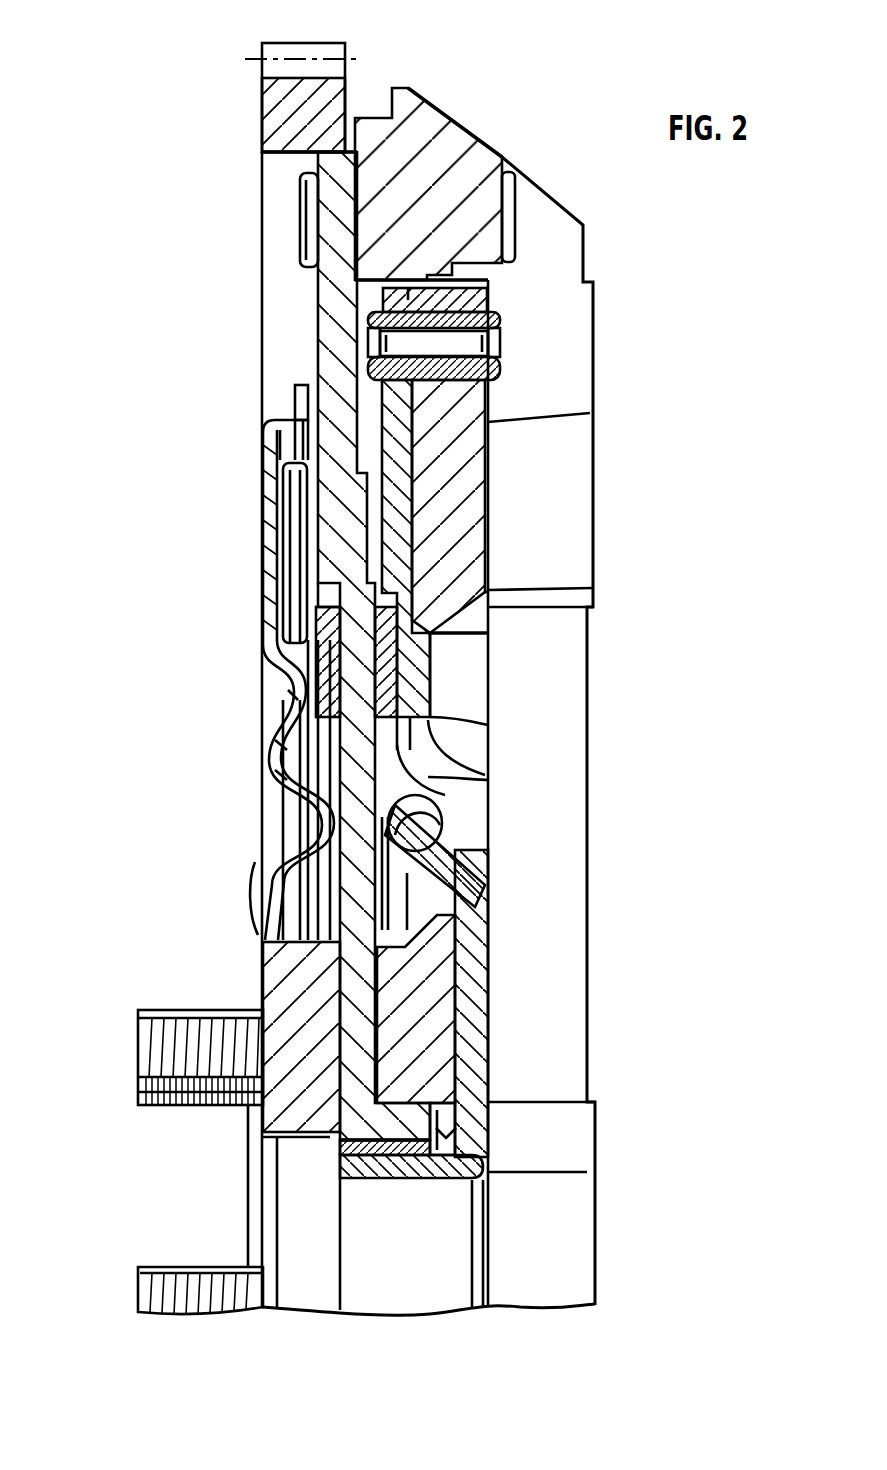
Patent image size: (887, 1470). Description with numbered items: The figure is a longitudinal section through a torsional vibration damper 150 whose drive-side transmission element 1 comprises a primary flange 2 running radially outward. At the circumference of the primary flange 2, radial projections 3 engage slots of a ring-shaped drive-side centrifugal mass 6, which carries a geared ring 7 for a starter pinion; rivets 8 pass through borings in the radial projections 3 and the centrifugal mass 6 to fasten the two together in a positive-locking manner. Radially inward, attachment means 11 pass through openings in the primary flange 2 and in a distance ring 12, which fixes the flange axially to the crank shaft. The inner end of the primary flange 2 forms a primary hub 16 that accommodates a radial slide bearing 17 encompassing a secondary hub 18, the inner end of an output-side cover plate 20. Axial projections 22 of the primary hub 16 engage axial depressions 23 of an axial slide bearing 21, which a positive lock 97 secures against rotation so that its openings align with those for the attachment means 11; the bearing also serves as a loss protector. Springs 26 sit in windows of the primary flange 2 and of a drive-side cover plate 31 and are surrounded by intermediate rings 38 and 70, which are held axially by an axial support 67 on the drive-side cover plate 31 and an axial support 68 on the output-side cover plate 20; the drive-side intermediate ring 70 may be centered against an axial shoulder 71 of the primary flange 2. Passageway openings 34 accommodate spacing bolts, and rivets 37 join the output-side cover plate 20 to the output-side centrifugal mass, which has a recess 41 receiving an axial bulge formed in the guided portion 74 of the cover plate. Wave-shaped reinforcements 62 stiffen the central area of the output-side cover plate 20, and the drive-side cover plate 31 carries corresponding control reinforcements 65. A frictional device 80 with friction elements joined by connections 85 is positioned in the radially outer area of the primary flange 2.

The drive-side transmission element 1 is at (243, 131).
The primary flange 2 is at (330, 300).
The radial projections 3 is at (320, 163).
The drive-side centrifugal mass 6 is at (430, 118).
The geared ring 7 is at (262, 82).
The rivets 8 is at (305, 215).
The attachment means 11 is at (152, 1027).
The distance ring 12 is at (282, 970).
The primary hub 16 is at (385, 1118).
The radial slide bearing 17 is at (365, 1180).
The secondary hub 18 is at (445, 1170).
The output-side cover plate 20 is at (432, 717).
The axial slide bearing 21 is at (442, 945).
The axial projections 22 is at (440, 1085).
The axial depressions 23 is at (472, 1155).
The springs 26 is at (468, 845).
The drive-side cover plate 31 is at (300, 690).
The passageway openings 34 is at (460, 342).
The rivets 37 is at (500, 312).
The intermediate ring 38 is at (395, 646).
The recess 41 is at (420, 618).
The reinforcements 62 is at (442, 790).
The control reinforcements 65 is at (282, 768).
The axial support 67 is at (298, 720).
The axial support 68 is at (413, 677).
The intermediate ring 70 is at (322, 636).
The axial shoulder 71 is at (320, 596).
The guided portion 74 is at (584, 590).
The frictional device 80 is at (260, 466).
The connections 85 is at (292, 540).
The positive lock 97 is at (453, 1125).
The torsional vibration damper 150 is at (560, 146).